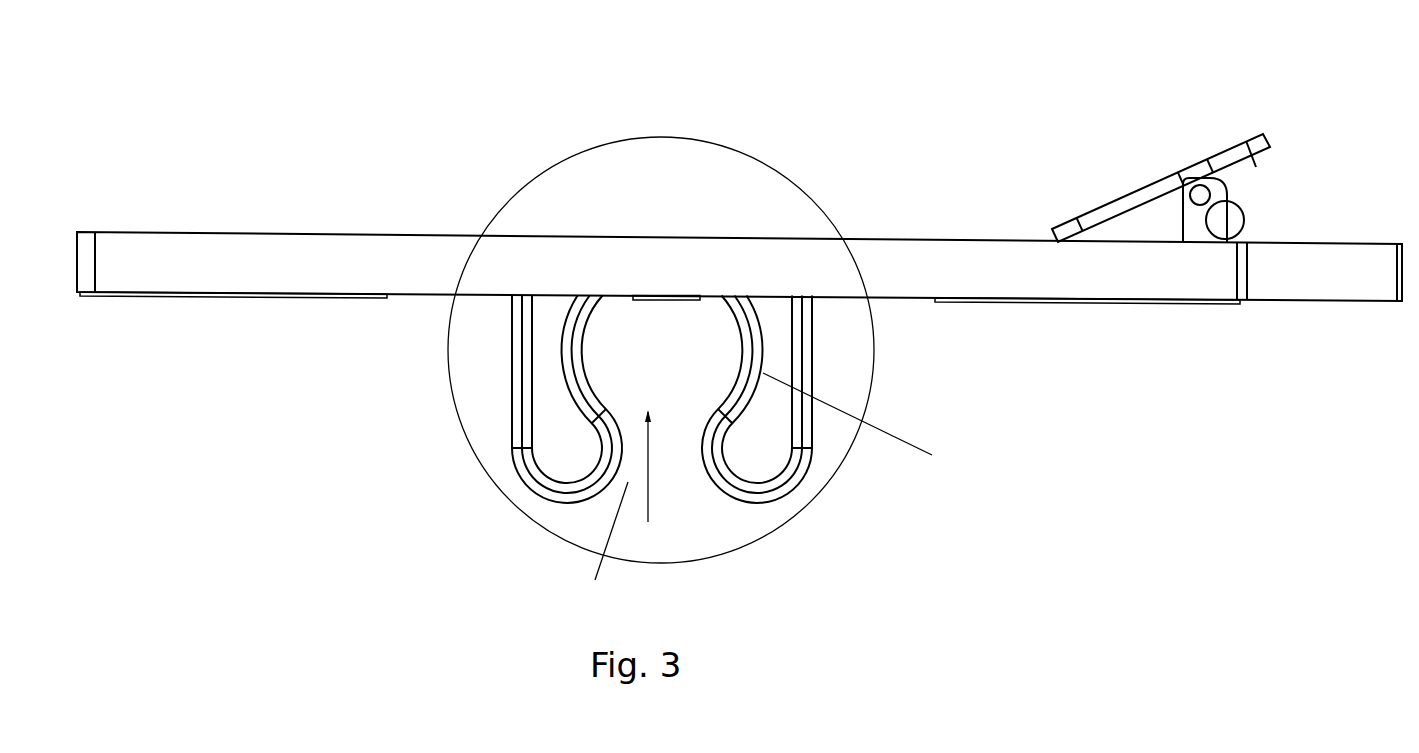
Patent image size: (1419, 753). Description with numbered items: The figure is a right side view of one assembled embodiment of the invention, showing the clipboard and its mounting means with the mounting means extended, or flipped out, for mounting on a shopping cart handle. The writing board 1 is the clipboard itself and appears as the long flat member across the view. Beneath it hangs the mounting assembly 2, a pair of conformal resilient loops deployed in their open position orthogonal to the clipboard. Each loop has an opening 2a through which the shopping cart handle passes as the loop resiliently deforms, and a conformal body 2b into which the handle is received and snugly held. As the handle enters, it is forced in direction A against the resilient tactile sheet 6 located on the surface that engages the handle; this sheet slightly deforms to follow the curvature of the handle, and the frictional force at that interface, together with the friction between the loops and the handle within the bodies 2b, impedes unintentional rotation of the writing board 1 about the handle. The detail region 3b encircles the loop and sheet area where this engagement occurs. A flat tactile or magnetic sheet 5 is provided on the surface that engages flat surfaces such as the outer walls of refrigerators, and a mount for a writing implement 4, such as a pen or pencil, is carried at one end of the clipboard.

The writing board 1 is at (650, 237).
The mounting assembly 2 is at (783, 492).
The openings 2a is at (592, 539).
The conformal body 2b is at (865, 421).
The detail region 3b is at (480, 452).
The mount for a writing implement 4 is at (1229, 220).
The flat tactile or magnetic sheet 5 is at (243, 297).
The resilient tactile sheet 6 is at (670, 300).
The direction A is at (657, 473).